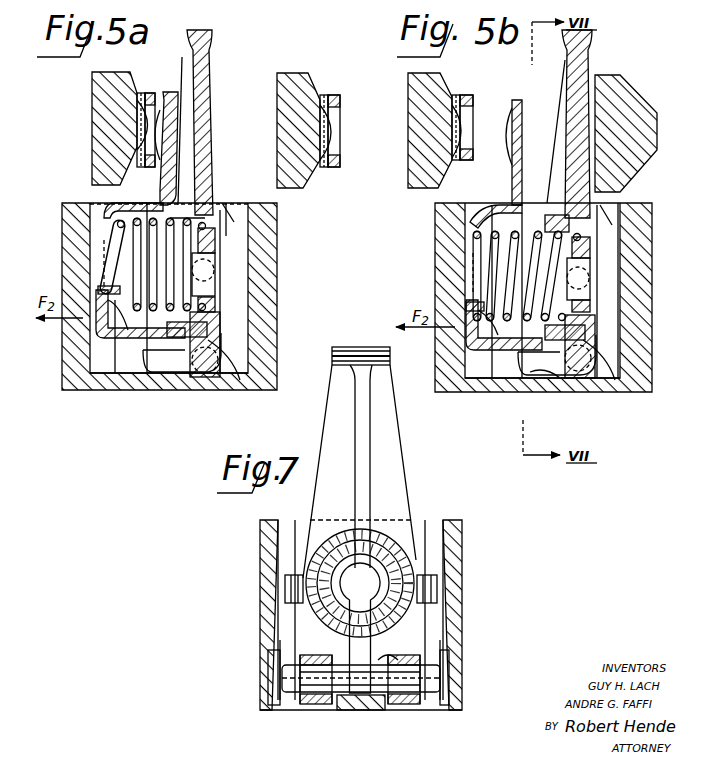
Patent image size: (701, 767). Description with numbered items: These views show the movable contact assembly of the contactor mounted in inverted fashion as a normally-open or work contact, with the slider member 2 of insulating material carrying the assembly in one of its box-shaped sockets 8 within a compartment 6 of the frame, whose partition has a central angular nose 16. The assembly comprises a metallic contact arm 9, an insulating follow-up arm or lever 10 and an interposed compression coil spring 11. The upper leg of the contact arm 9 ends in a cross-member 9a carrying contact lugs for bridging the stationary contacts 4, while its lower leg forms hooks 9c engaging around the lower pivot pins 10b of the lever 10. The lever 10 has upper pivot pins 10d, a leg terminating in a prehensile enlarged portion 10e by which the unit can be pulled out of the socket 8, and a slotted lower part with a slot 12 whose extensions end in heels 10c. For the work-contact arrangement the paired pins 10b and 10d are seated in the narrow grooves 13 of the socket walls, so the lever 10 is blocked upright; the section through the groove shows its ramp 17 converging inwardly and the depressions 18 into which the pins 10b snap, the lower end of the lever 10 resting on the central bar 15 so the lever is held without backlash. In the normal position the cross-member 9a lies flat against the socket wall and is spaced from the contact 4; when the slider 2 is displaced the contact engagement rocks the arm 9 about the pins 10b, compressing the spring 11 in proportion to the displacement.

In FIG. 5A, the slider member 2 is at (265, 306).
In FIG. 5B, the slider member 2 is at (648, 283).
In FIG. 5A, the stationary contacts 4 is at (150, 100).
In FIG. 5B, the stationary contacts 4 is at (468, 108).
In FIG. 5A, the compartment 6 is at (100, 124).
In FIG. 5B, the compartment 6 is at (425, 130).
In FIG. 7, the socket 8 is at (420, 528).
In FIG. 5A, the contact arm 9 is at (115, 202).
In FIG. 5B, the contact arm 9 is at (510, 198).
In FIG. 5A, the cross-member 9a is at (180, 100).
In FIG. 5B, the cross-member 9a is at (524, 135).
In FIG. 5A, the hooks 9c is at (226, 378).
In FIG. 5B, the hooks 9c is at (600, 362).
In FIG. 7, the hooks 9c is at (305, 655).
In FIG. 5A, the follow-up arm or lever 10 is at (205, 108).
In FIG. 5B, the follow-up arm or lever 10 is at (565, 100).
In FIG. 7, the follow-up arm or lever 10 is at (395, 455).
In FIG. 5A, the pivot pins 10b is at (200, 378).
In FIG. 5B, the pivot pins 10b is at (590, 385).
In FIG. 7, the pivot pins 10b is at (290, 680).
In FIG. 5B, the heel 10c is at (548, 372).
In FIG. 7, the heel 10c is at (305, 700).
In FIG. 5A, the pivot pins 10d is at (215, 268).
In FIG. 5B, the pivot pins 10d is at (600, 292).
In FIG. 7, the pivot pins 10d is at (396, 610).
In FIG. 7, the prehensile enlarged portion 10e is at (358, 350).
In FIG. 5A, the compression coil spring 11 is at (112, 340).
In FIG. 5B, the compression coil spring 11 is at (500, 290).
In FIG. 7, the slot 12 is at (372, 627).
In FIG. 5A, the groove 13 is at (224, 212).
In FIG. 5B, the groove 13 is at (603, 217).
In FIG. 7, the groove 13 is at (440, 630).
In FIG. 5A, the bar 15 is at (130, 390).
In FIG. 5B, the bar 15 is at (506, 390).
In FIG. 7, the bar 15 is at (345, 708).
In FIG. 5A, the angular nose 16 is at (118, 150).
In FIG. 5B, the angular nose 16 is at (448, 100).
In FIG. 7, the ramp 17 is at (268, 552).
In FIG. 7, the depressions 18 is at (272, 660).